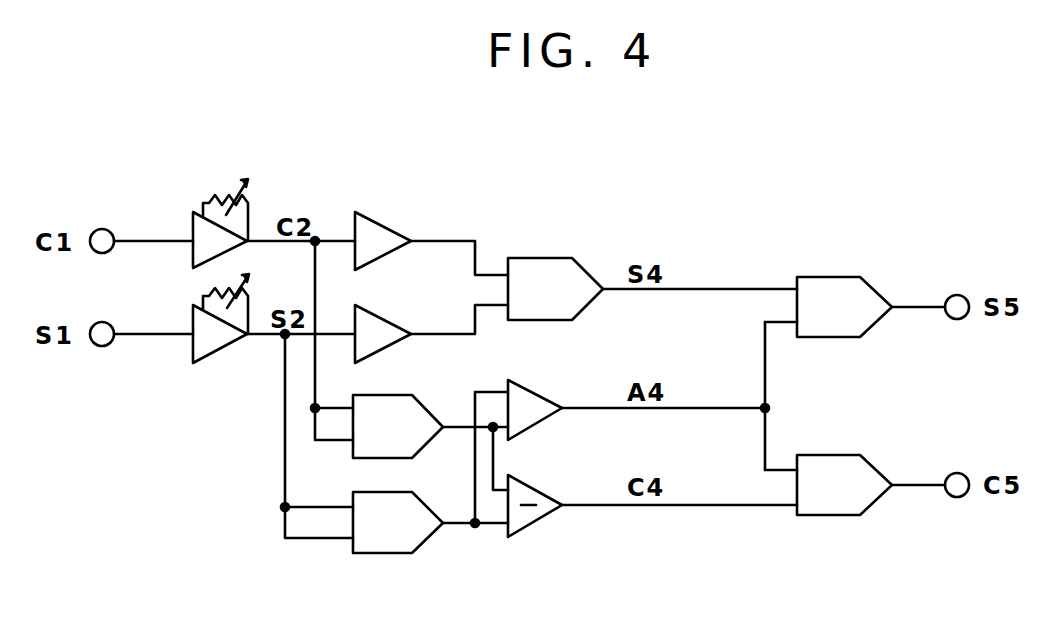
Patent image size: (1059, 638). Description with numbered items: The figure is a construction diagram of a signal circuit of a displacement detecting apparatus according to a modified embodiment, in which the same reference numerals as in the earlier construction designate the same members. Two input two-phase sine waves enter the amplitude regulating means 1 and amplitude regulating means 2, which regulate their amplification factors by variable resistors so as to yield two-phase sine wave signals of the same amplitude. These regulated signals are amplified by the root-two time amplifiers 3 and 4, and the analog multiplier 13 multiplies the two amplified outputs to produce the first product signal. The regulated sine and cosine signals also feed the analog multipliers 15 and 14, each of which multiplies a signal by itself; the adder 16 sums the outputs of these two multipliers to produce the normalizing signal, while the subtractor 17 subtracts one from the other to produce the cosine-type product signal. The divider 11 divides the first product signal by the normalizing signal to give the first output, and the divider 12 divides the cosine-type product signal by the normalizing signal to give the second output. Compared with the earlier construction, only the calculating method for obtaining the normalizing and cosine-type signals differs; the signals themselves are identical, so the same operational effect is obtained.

The amplitude regulating means 1 is at (193, 230).
The amplitude regulating means 2 is at (192, 350).
The √2 time amplifier 3 is at (375, 222).
The √2 time amplifier 4 is at (378, 317).
The divider 11 is at (837, 277).
The divider 12 is at (830, 455).
The analog multiplier 13 is at (540, 258).
The analog multiplier 14 is at (388, 555).
The analog multiplier 15 is at (393, 395).
The adder 16 is at (537, 390).
The subtractor 17 is at (543, 455).